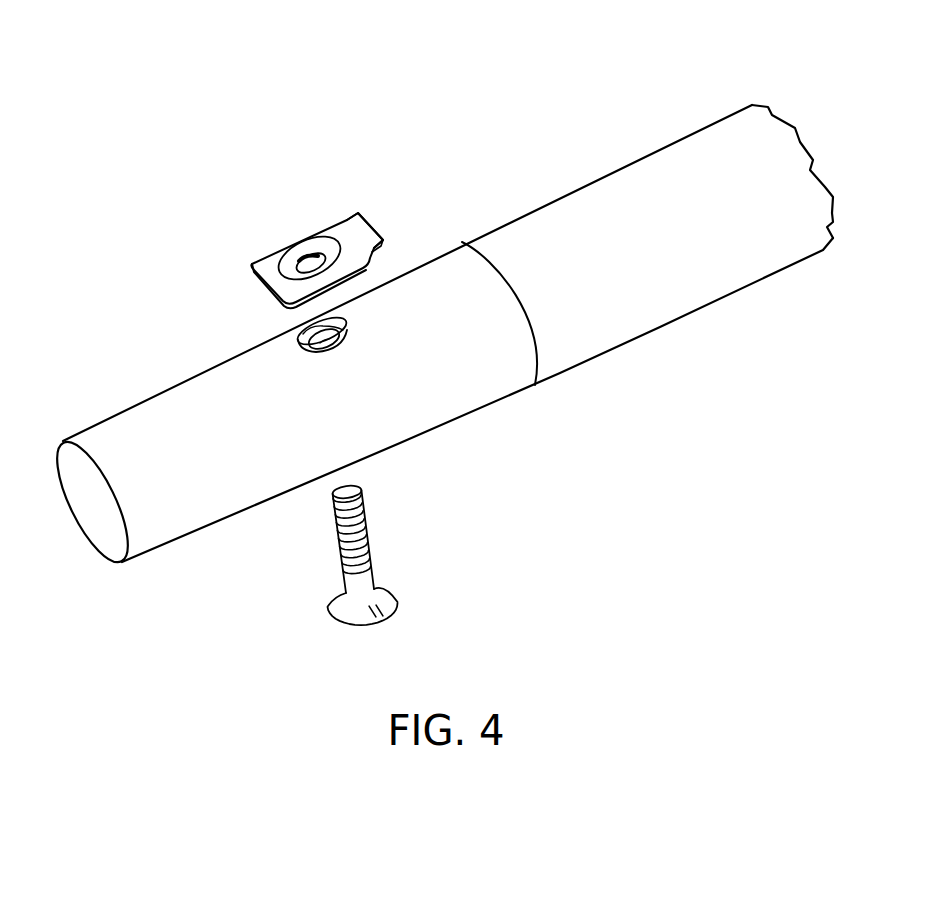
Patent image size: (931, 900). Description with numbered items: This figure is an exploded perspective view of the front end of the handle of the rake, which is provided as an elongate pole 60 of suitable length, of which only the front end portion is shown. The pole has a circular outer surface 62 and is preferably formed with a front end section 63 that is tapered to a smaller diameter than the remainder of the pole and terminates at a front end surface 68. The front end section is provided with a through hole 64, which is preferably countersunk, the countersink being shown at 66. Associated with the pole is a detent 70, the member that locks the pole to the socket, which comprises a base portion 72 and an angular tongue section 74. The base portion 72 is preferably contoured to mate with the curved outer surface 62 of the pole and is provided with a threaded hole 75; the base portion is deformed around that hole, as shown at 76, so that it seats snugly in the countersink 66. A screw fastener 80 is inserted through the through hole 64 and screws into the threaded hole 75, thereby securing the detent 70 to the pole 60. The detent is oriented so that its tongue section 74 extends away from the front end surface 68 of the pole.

The elongate pole 60 is at (679, 338).
The circular outer surface 62 is at (646, 276).
The front end section 63 is at (177, 518).
The through hole 64 is at (347, 340).
The countersink 66 is at (345, 332).
The front end surface 68 is at (97, 522).
The detent 70 is at (261, 238).
The base portion 72 is at (280, 292).
The angular tongue section 74 is at (376, 232).
The threaded hole 75 is at (323, 260).
The deformed area 76 is at (312, 248).
The screw fastener 80 is at (397, 551).